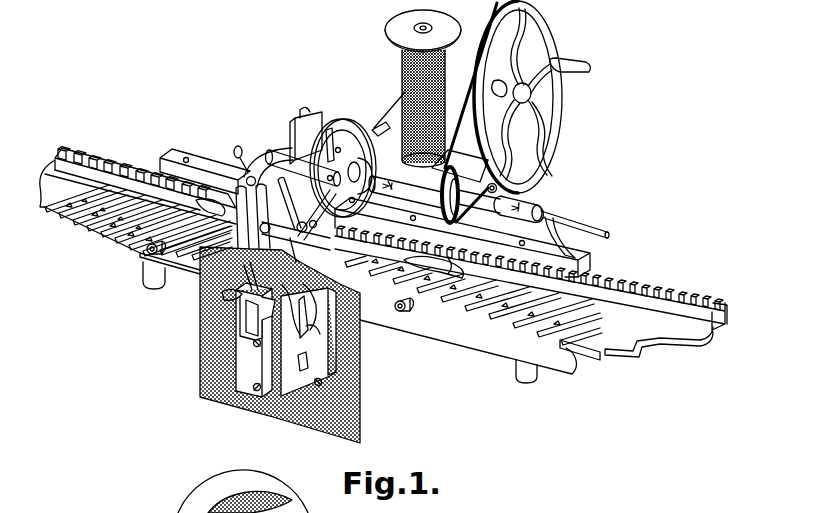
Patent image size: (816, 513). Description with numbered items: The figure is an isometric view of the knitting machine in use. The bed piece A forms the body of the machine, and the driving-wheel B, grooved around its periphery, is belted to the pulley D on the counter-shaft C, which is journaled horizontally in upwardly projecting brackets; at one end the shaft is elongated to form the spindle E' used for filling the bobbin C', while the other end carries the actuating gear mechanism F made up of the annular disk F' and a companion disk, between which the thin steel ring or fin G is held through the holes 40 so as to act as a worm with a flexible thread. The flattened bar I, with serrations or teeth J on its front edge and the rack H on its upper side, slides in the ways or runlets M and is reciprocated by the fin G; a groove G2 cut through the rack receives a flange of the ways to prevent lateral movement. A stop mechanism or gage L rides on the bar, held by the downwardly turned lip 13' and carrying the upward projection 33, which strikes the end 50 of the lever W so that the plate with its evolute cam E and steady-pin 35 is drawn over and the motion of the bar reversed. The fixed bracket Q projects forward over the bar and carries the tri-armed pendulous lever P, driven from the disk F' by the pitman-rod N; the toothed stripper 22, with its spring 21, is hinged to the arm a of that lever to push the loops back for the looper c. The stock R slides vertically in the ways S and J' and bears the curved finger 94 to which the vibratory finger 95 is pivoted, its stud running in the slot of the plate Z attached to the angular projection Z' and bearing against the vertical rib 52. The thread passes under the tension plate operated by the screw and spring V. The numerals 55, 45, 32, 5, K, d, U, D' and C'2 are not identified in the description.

The bed piece A is at (308, 271).
The flattened bar I is at (140, 192).
The rack H is at (145, 174).
The serrations or teeth J is at (138, 222).
The slide strip 55 is at (102, 185).
The end of lever w 50 is at (143, 194).
The slide strip 45 is at (177, 203).
The roller 32 is at (280, 284).
The ways or runlets M is at (375, 213).
The upward projection 33 is at (471, 247).
The stop mechanism or gage L is at (330, 238).
The steady-pin 35 is at (473, 308).
The holes in ring G 40 is at (551, 292).
The slide strip 5 is at (523, 286).
The downwardly-turned flange or lip 13' is at (663, 342).
The groove G2 is at (728, 313).
The support bracket K is at (271, 345).
The ways or runlets S is at (252, 340).
The ways or runlets J' is at (257, 334).
The plate Z is at (308, 342).
The angular projection Z' is at (313, 317).
The curved finger 94 is at (297, 354).
The vibratory finger 95 is at (314, 332).
The vertical rib 52 is at (311, 373).
The lever arm d is at (309, 307).
The looper c is at (285, 310).
The arm of lever P a is at (232, 292).
The toothed plate or stripper 22 is at (247, 276).
The fixed arm or bracket Q is at (239, 159).
The stock R is at (264, 198).
The tri-armed pendulous lever P is at (263, 216).
The link U is at (295, 219).
The pitman-rod N is at (317, 215).
The lever W is at (300, 150).
The screw and spring V is at (308, 124).
The ring or fin G is at (352, 124).
The actuating gear mechanism disk F is at (345, 170).
The annular disk F' is at (332, 131).
The evolute or cam E is at (388, 115).
The counter-shaft C is at (404, 192).
The spring 21 is at (392, 186).
The pulley D is at (469, 113).
The bearing block D' is at (464, 171).
The bobbin C' is at (479, 204).
The spindle E' is at (575, 224).
The spool C'2 is at (423, 88).
The driving-wheel B is at (532, 97).